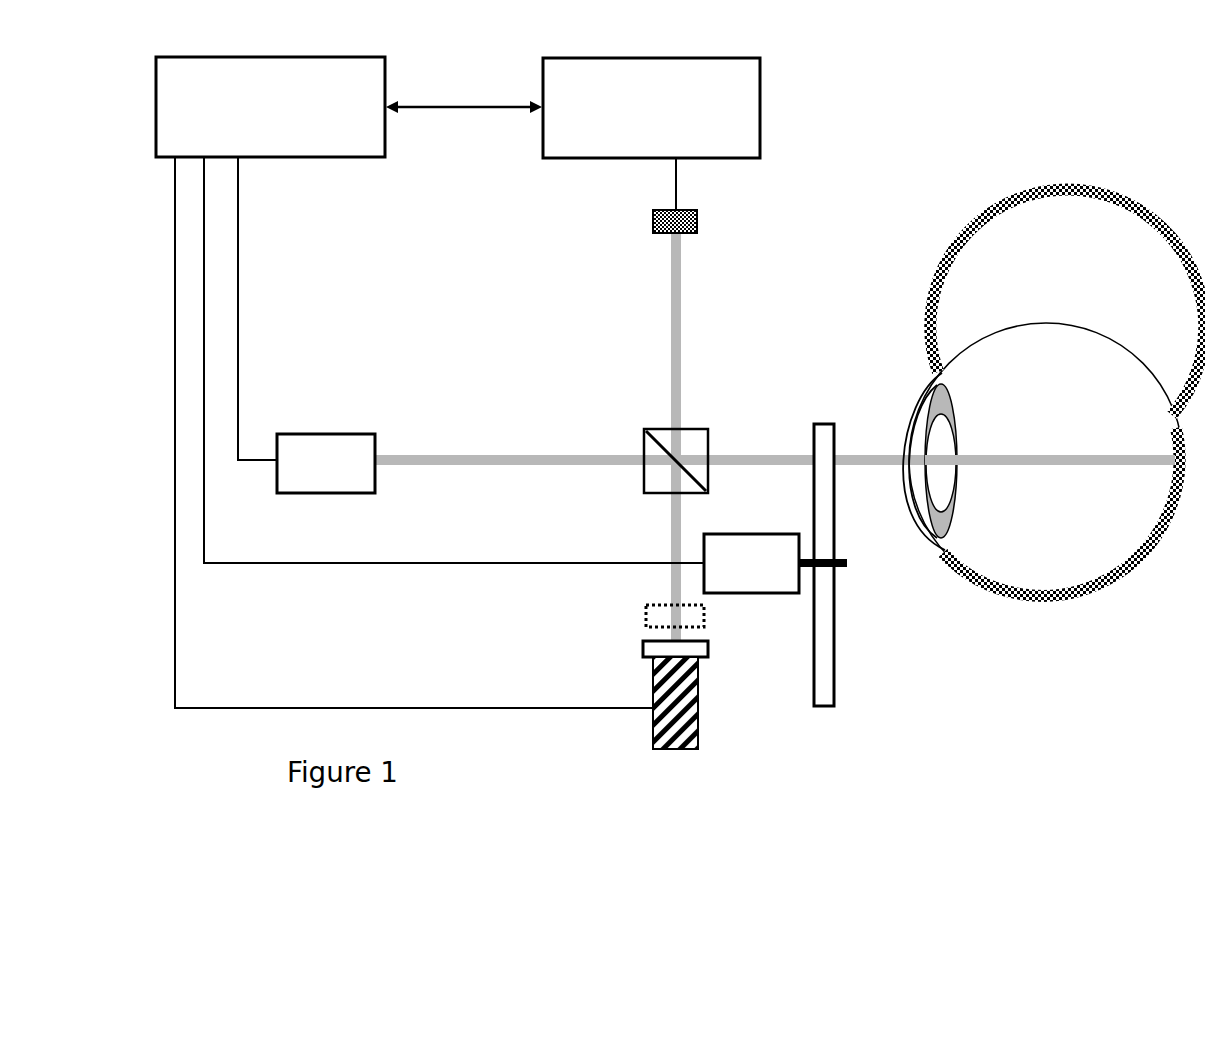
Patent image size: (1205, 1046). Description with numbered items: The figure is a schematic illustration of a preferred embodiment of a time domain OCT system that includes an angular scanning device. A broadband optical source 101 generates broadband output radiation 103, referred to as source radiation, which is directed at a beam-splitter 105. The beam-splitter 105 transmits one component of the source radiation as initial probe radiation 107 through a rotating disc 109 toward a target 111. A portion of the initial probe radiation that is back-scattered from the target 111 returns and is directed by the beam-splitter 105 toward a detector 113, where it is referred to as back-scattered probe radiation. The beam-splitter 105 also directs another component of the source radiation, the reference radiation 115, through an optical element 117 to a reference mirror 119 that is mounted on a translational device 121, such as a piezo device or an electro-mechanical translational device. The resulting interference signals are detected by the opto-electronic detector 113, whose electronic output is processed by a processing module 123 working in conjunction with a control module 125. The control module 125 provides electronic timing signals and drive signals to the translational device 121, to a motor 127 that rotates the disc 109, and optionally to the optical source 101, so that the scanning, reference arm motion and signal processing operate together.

The broadband optical source 101 is at (378, 472).
The broadband output radiation 103 is at (467, 450).
The beam-splitter 105 is at (645, 422).
The initial probe radiation 107 is at (795, 450).
The rotating disc 109 is at (838, 700).
The target 111 is at (1053, 603).
The detector 113 is at (705, 225).
The reference radiation 115 is at (665, 530).
The optical element 117 is at (710, 630).
The reference mirror 119 is at (640, 640).
The translational device 121 is at (700, 722).
The processing module 123 is at (765, 90).
The control module 125 is at (300, 162).
The motor 127 is at (785, 532).